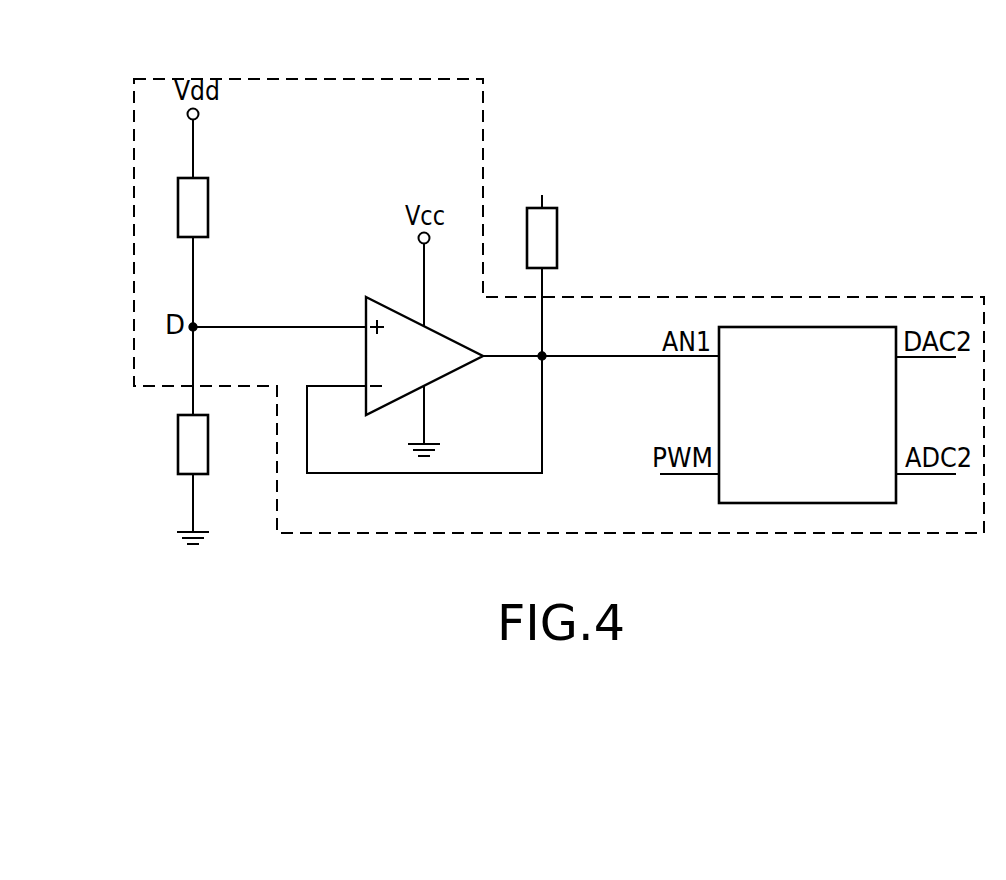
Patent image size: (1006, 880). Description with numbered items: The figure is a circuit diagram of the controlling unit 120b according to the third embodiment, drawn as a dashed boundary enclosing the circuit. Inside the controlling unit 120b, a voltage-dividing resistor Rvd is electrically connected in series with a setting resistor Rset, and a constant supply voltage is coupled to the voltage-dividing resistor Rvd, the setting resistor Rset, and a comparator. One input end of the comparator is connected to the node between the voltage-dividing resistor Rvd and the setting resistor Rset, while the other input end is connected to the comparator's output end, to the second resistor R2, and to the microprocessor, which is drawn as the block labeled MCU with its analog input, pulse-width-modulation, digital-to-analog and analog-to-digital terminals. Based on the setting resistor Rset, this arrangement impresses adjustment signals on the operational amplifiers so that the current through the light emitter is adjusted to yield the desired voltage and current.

The controlling unit 120b is at (305, 83).
The voltage-dividing resistor Rvd is at (219, 207).
The setting resistor Rset is at (222, 444).
The second resistor R2 is at (561, 238).
The microcontroller unit MCU is at (807, 415).